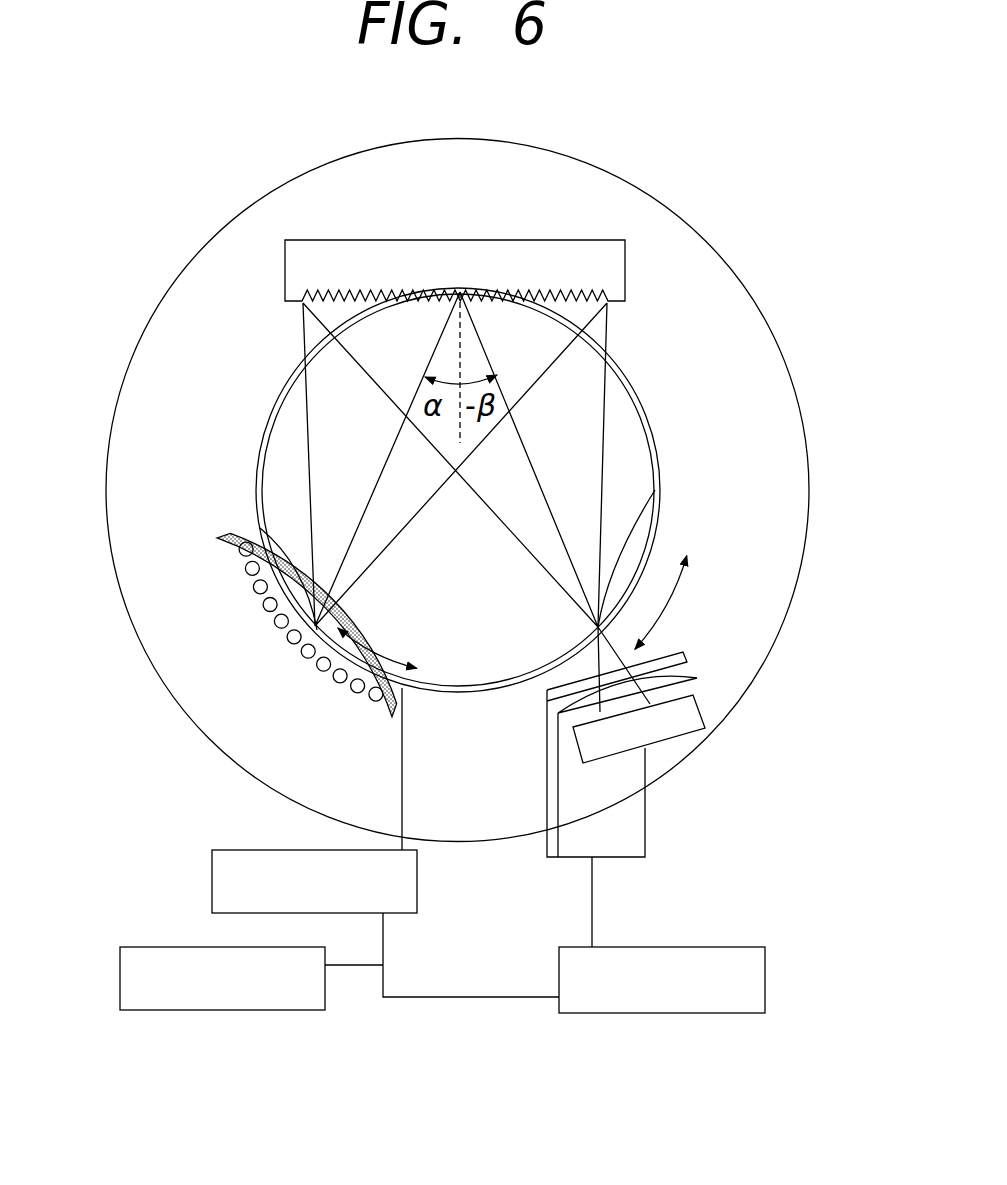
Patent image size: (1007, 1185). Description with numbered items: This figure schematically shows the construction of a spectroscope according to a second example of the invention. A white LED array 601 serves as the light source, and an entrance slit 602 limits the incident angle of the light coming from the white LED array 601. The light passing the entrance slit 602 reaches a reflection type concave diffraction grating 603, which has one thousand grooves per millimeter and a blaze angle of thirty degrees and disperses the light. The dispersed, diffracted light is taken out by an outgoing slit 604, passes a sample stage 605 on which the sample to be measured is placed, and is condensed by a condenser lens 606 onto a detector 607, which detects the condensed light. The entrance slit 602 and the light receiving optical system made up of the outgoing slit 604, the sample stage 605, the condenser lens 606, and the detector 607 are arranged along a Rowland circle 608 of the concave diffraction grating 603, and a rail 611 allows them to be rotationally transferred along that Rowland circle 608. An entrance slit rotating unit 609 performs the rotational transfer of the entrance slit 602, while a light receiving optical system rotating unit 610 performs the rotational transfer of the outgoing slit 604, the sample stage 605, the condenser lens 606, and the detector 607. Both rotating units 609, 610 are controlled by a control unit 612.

The white LED array 601 is at (400, 712).
The entrance slit 602 is at (262, 530).
The concave diffraction grating 603 is at (627, 250).
The outgoing slit 604 is at (653, 490).
The sample stage 605 is at (687, 652).
The condenser lens 606 is at (697, 678).
The detector 607 is at (663, 746).
The Rowland circle 608 is at (658, 507).
The entrance slit rotating unit 609 is at (342, 900).
The light receiving optical system rotating unit 610 is at (688, 1003).
The rail 611 is at (207, 263).
The control unit 612 is at (249, 1003).